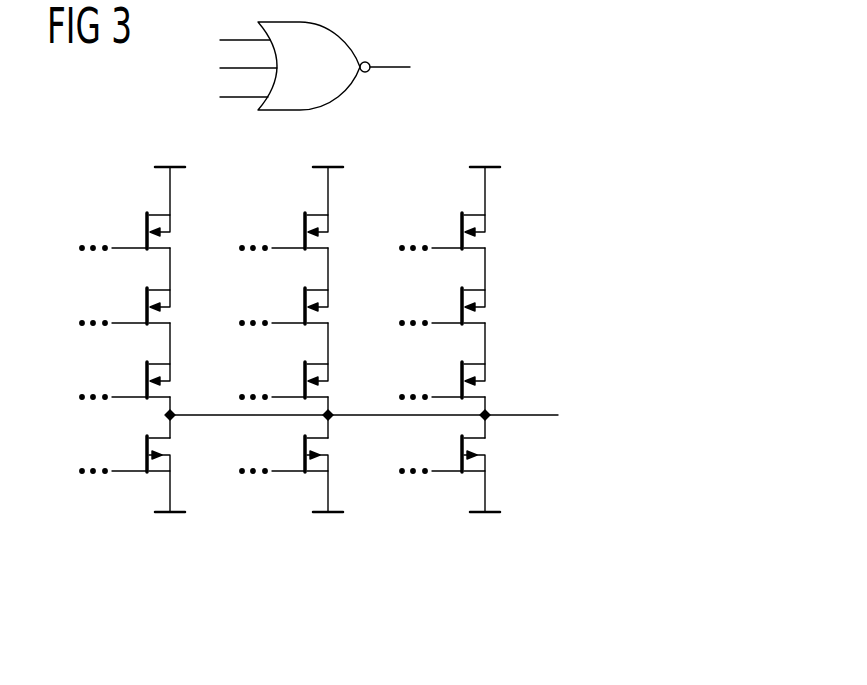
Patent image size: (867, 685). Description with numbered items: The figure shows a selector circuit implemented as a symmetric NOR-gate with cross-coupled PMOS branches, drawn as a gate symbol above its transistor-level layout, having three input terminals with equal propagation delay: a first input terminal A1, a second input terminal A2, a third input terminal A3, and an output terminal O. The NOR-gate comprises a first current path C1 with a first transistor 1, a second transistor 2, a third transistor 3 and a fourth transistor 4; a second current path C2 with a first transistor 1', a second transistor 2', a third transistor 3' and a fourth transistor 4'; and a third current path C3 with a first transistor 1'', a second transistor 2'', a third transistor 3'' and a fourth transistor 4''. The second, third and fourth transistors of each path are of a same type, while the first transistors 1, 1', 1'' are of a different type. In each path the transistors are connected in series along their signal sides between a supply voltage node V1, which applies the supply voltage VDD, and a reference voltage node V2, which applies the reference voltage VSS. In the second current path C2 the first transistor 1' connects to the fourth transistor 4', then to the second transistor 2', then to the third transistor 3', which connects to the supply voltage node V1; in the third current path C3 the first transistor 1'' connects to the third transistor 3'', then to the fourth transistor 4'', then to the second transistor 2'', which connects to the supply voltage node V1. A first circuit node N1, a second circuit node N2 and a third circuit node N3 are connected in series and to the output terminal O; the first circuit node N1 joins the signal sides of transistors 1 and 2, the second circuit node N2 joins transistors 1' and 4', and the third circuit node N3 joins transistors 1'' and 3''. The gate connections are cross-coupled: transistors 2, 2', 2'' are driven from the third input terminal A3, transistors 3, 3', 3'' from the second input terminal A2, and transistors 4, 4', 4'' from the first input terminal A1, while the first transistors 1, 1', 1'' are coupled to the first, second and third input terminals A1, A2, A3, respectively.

The first transistor 1 is at (135, 447).
The second transistor 2 is at (135, 373).
The third transistor 3 is at (135, 299).
The fourth transistor 4 is at (135, 224).
The first transistor 1' is at (292, 447).
The second transistor 2' is at (292, 299).
The third transistor 3' is at (292, 224).
The fourth transistor 4' is at (292, 373).
The first transistor 1'' is at (448, 447).
The second transistor 2'' is at (448, 224).
The third transistor 3'' is at (448, 373).
The fourth transistor 4'' is at (448, 299).
The supply voltage node V1 is at (168, 197).
The reference voltage node V2 is at (168, 492).
The first circuit node N1 is at (175, 418).
The second circuit node N2 is at (333, 418).
The third circuit node N3 is at (490, 413).
The first current path C1 is at (141, 557).
The second current path C2 is at (299, 557).
The third current path C3 is at (457, 557).
The first input terminal A1 is at (257, 256).
The second input terminal A2 is at (257, 270).
The third input terminal A3 is at (257, 284).
The output terminal O is at (374, 241).
The supply voltage VDD is at (328, 150).
The reference voltage VSS is at (329, 530).